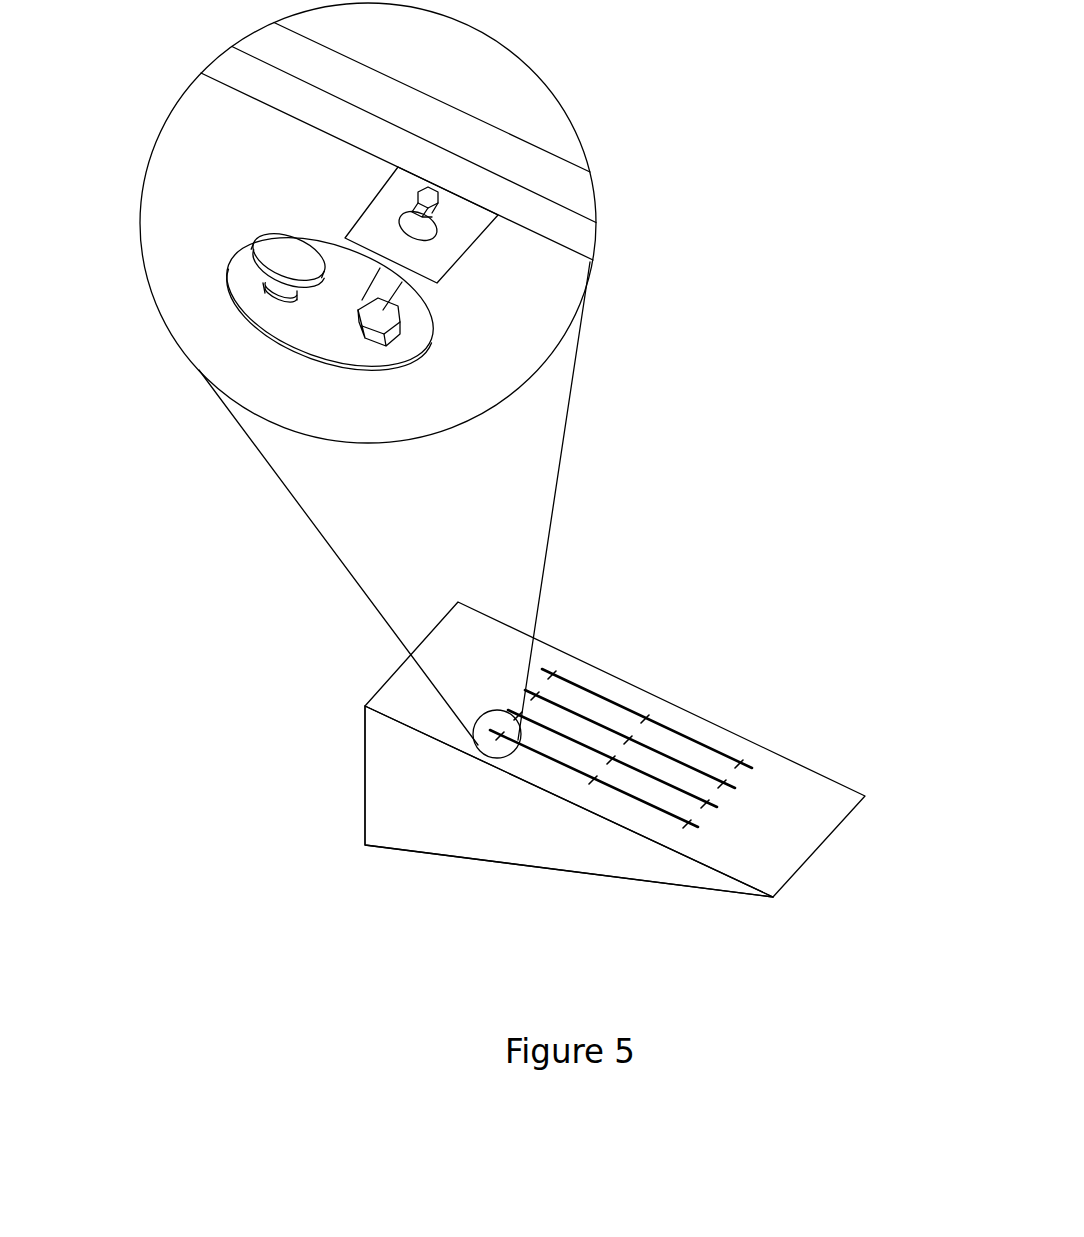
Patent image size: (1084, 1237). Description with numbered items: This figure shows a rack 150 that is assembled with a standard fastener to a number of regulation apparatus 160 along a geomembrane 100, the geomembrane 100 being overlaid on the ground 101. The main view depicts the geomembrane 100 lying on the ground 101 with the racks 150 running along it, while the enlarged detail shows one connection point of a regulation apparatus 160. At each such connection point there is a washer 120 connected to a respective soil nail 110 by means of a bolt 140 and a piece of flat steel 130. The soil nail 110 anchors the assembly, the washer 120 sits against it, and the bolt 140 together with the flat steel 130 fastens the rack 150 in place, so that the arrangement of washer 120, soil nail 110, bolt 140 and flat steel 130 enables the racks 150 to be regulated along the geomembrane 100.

The geomembrane 100 is at (413, 718).
The ground 101 is at (393, 803).
The soil nail 110 is at (247, 260).
The washer 120 is at (320, 303).
The flat steel 130 is at (454, 256).
The bolt 140 is at (397, 293).
The rack 150 is at (338, 124).
The regulation apparatus 160 is at (458, 369).